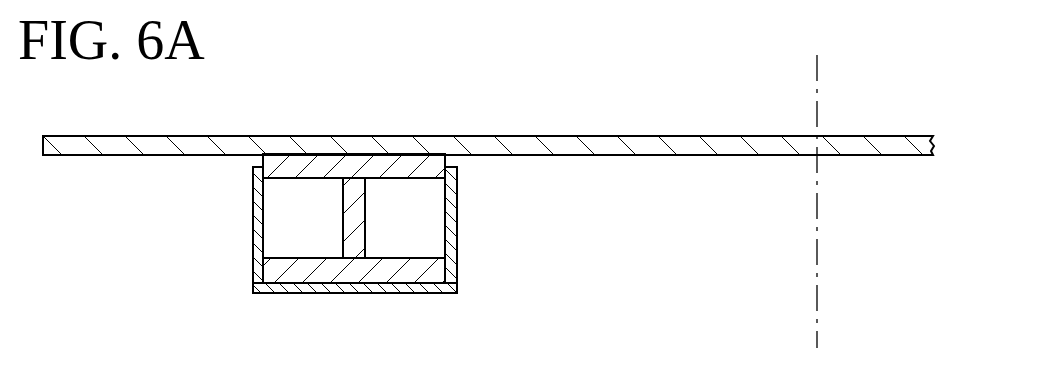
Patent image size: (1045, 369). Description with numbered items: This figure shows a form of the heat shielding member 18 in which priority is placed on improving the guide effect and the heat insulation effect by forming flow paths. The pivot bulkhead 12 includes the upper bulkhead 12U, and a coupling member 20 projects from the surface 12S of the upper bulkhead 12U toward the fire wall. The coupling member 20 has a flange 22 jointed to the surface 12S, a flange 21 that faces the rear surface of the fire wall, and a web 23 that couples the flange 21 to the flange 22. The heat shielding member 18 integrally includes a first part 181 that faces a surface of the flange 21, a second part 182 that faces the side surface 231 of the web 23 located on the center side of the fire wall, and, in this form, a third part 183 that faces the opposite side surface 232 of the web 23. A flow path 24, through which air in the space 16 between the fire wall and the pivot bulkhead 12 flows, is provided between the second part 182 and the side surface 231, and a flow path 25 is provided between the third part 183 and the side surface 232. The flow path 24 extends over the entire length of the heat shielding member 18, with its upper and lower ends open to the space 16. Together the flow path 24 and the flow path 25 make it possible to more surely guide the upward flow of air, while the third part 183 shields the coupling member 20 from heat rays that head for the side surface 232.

The pivot bulkhead 12 is at (726, 108).
The upper bulkhead 12U is at (767, 135).
The surface of the upper bulkhead 12S is at (637, 156).
The space 16 is at (618, 282).
The heat shielding member 18 is at (435, 293).
The first part 181 is at (375, 295).
The second part 182 is at (458, 218).
The third part 183 is at (257, 235).
The coupling member 20 is at (410, 162).
The flange 21 is at (260, 272).
The flange 22 is at (263, 160).
The web 23 is at (343, 191).
The side surface 231 is at (368, 247).
The side surface 232 is at (343, 238).
The flow path 24 is at (420, 232).
The flow path 25 is at (317, 232).